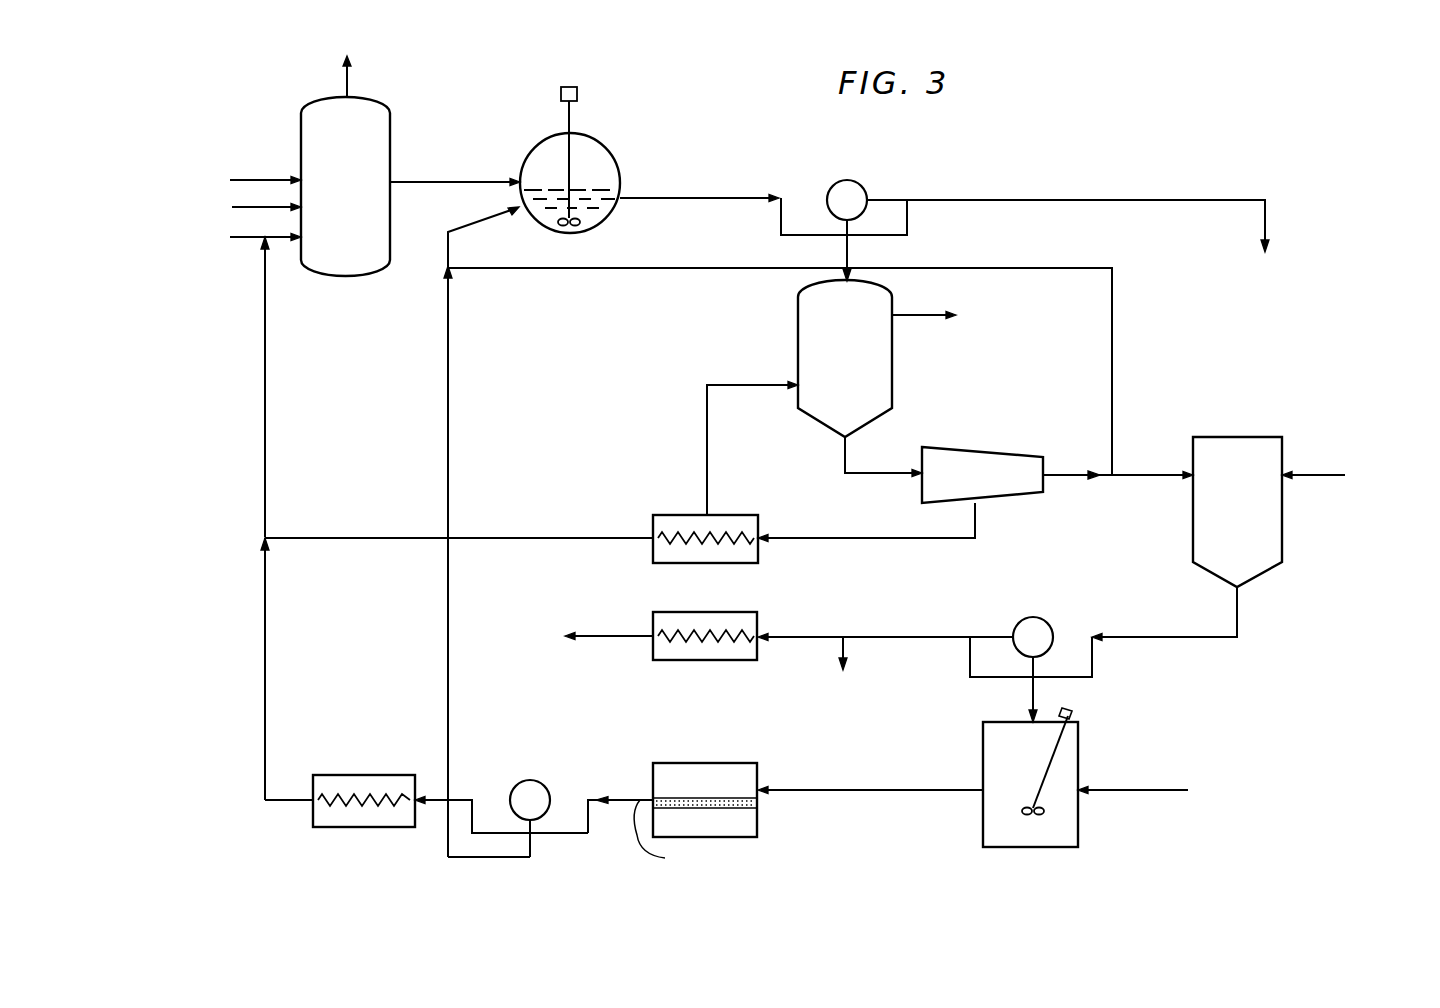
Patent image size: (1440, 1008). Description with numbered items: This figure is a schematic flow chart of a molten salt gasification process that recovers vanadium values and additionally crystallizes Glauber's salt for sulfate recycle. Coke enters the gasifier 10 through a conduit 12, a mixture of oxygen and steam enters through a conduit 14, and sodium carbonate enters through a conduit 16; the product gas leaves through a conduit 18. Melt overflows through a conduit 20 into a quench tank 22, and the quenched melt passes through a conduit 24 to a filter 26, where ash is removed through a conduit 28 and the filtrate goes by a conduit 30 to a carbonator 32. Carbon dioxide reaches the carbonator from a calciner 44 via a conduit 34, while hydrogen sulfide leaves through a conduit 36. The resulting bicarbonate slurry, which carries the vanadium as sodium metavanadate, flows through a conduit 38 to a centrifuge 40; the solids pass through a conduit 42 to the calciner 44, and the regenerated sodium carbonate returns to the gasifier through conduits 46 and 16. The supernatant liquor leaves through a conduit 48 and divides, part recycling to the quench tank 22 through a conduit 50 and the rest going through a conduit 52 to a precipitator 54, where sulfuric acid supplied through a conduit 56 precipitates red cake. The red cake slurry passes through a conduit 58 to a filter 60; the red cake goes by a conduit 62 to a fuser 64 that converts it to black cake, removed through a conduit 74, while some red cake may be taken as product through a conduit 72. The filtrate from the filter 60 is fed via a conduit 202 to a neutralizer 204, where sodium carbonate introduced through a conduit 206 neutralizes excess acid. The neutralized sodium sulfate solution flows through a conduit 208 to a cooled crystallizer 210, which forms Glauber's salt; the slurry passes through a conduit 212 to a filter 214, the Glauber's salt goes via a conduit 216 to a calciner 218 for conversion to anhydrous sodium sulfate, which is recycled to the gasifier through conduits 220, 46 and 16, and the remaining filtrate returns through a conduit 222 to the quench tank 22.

The gasifier 10 is at (347, 201).
The conduit 12 is at (235, 178).
The conduit 14 is at (253, 207).
The conduit 16 is at (248, 242).
The conduit 18 is at (349, 80).
The conduit 20 is at (449, 183).
The quench tank 22 is at (611, 152).
The conduit 24 is at (719, 183).
The filter 26 is at (779, 223).
The conduit 28 is at (1054, 184).
The conduit 30 is at (850, 250).
The carbonator 32 is at (843, 370).
The conduit 34 is at (738, 384).
The conduit 36 is at (923, 315).
The conduit 38 is at (838, 455).
The centrifuge 40 is at (979, 490).
The conduit 42 is at (828, 543).
The calciner 44 is at (653, 515).
The conduit 46 is at (328, 537).
The conduit 48 is at (1078, 480).
The conduit 50 is at (1113, 369).
The conduit 52 is at (1149, 480).
The precipitator 54 is at (1241, 491).
The conduit 56 is at (1330, 481).
The conduit 58 is at (1239, 618).
The filter 60 is at (1093, 667).
The conduit 62 is at (902, 636).
The fuser 64 is at (757, 661).
The conduit 72 is at (847, 652).
The conduit 74 is at (607, 641).
The conduit 202 is at (1030, 699).
The neutralizer 204 is at (1080, 825).
The conduit 206 is at (1142, 780).
The conduit 208 is at (861, 780).
The crystallizer 210 is at (758, 825).
The conduit 212 is at (614, 798).
The filter 214 is at (517, 858).
The conduit 216 is at (462, 800).
The calciner 218 is at (310, 826).
The conduit 220 is at (265, 701).
The conduit 222 is at (449, 393).